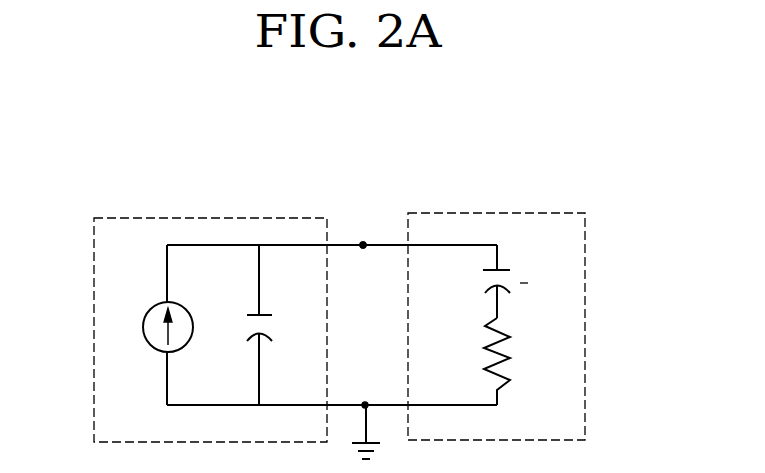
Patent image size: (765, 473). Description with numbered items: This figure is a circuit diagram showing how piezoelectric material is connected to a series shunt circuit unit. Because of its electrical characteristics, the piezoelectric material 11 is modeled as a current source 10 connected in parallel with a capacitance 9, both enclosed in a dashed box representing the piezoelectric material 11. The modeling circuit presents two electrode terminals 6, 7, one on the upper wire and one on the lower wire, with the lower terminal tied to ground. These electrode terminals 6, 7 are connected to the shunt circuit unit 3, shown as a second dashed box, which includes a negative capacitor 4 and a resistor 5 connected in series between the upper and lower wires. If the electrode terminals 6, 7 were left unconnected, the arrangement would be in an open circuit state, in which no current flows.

The piezoelectric material 11 is at (190, 218).
The current source 10 is at (153, 347).
The capacitance 9 is at (253, 313).
The electrode terminal 6 is at (363, 248).
The electrode terminal 7 is at (366, 402).
The shunt circuit unit 3 is at (497, 213).
The negative capacitor 4 is at (490, 288).
The resistor 5 is at (488, 350).